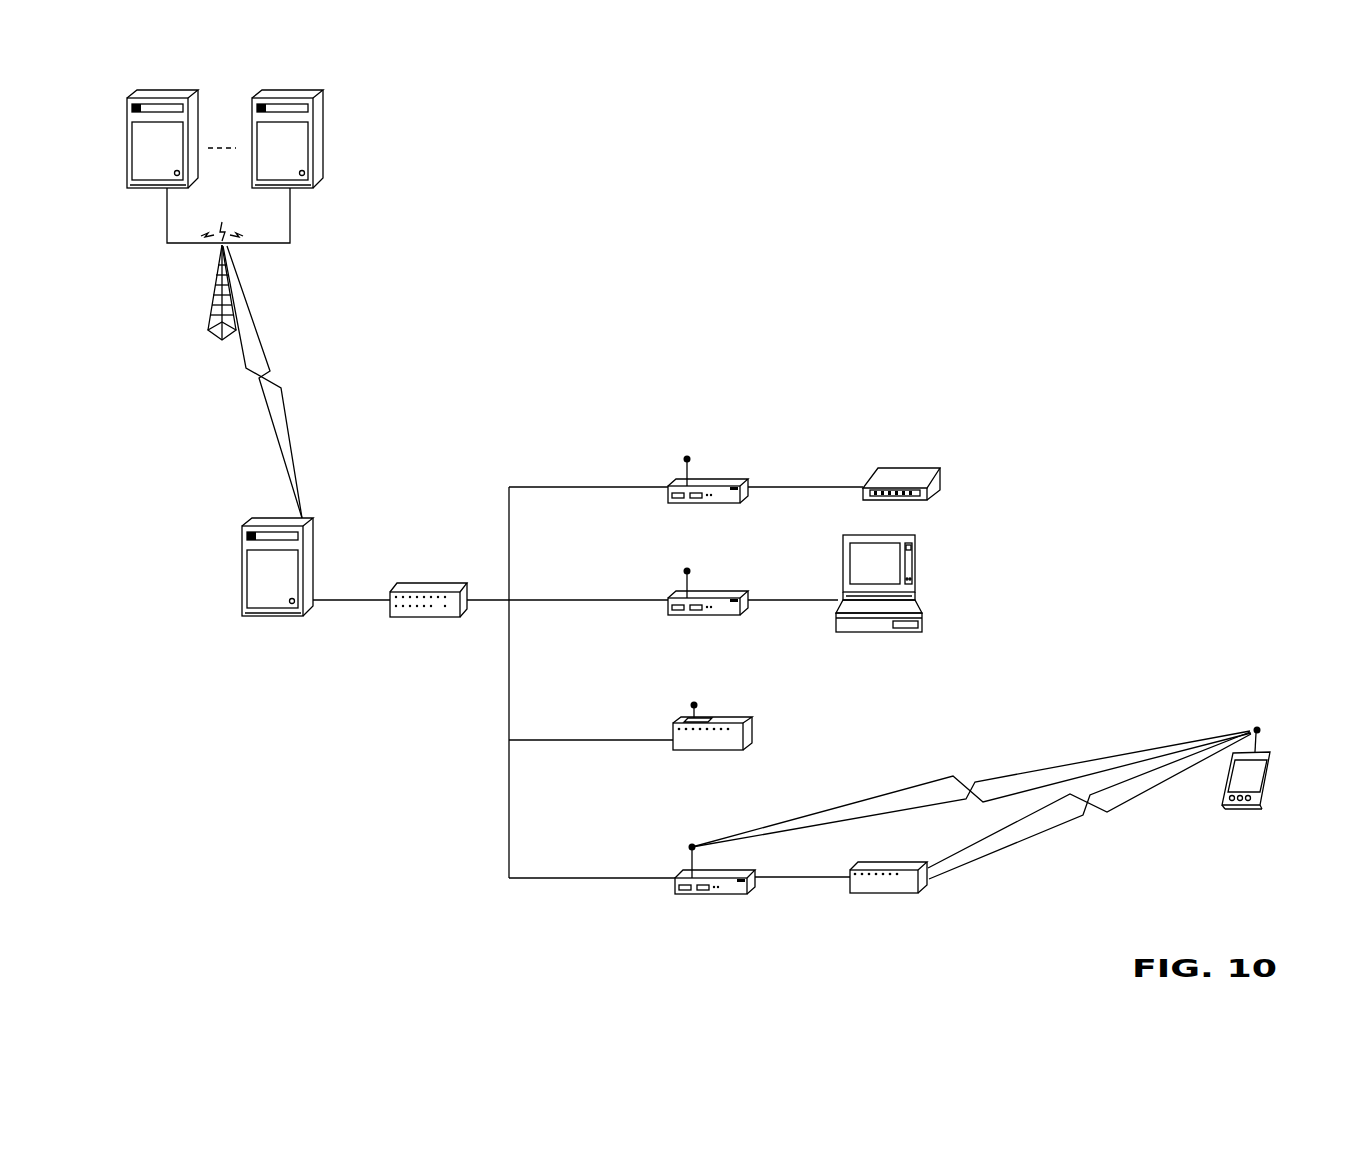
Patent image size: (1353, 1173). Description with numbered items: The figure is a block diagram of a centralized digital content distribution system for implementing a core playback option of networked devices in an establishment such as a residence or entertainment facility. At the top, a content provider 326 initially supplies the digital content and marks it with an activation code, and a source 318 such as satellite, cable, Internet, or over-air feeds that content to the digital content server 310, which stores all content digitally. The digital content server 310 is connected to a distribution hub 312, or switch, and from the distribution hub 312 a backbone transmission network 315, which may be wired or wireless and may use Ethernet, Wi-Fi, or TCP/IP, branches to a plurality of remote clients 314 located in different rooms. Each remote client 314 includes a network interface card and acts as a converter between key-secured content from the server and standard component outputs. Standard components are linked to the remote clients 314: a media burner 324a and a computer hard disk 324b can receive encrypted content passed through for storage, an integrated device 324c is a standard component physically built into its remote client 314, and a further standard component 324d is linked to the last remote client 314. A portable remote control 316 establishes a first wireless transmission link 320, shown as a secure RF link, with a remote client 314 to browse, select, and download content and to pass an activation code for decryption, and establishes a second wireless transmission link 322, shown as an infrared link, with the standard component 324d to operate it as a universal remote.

The content provider 326 is at (323, 138).
The source 318 is at (208, 303).
The digital content server 310 is at (313, 545).
The distribution hub 312 is at (432, 583).
The backbone transmission network 315 is at (533, 485).
The remote client 314 is at (712, 478).
The media burner 324a is at (898, 468).
The computer hard disk 324b is at (917, 578).
The integrated device 324c is at (752, 732).
The standard component 324d is at (928, 887).
The first wireless transmission link 320 is at (1032, 766).
The second wireless transmission link 322 is at (1058, 828).
The portable remote control 316 is at (1263, 750).